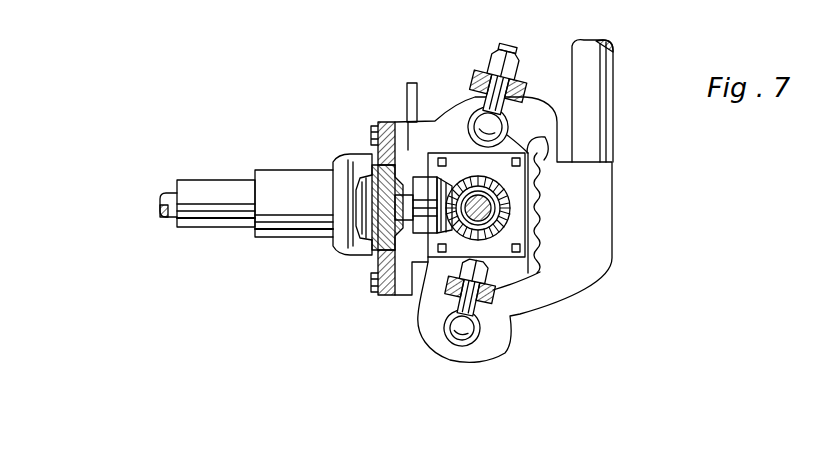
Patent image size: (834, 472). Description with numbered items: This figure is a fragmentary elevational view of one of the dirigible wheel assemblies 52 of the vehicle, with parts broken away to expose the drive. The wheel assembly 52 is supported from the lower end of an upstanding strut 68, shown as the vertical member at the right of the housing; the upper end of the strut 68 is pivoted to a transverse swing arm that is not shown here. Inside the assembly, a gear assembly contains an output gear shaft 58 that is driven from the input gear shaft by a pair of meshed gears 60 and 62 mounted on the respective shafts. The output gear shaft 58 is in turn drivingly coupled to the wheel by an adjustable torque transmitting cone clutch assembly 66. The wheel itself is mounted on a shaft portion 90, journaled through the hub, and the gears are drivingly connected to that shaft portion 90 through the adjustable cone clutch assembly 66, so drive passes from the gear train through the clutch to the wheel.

The dirigible side wheel assembly 52 is at (433, 114).
The output gear shaft 58 is at (378, 156).
The meshed gear 60 is at (542, 231).
The meshed gear 62 is at (445, 222).
The adjustable torque transmitting cone clutch assembly 66 is at (375, 196).
The upstanding strut 68 is at (613, 96).
The shaft portion 90 is at (168, 202).